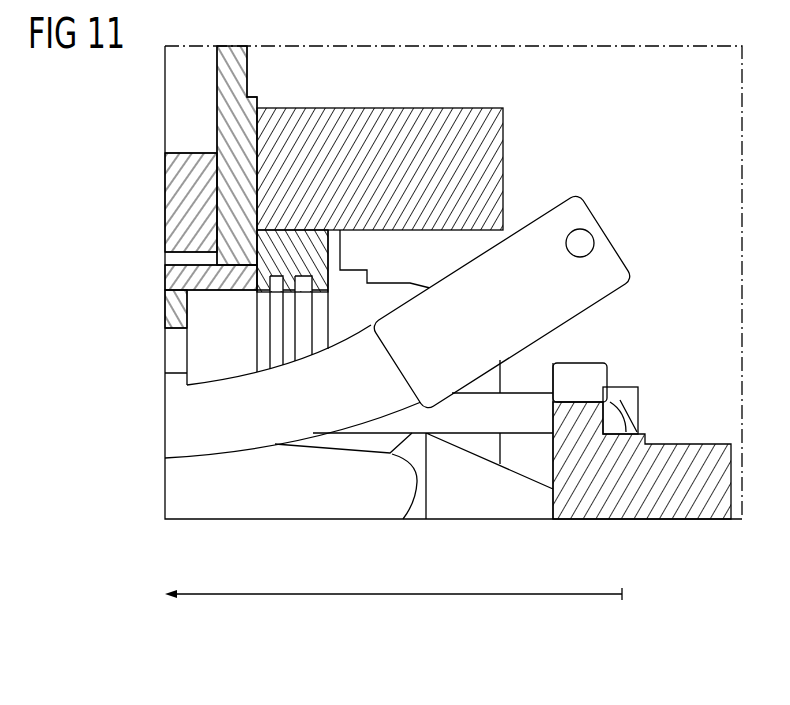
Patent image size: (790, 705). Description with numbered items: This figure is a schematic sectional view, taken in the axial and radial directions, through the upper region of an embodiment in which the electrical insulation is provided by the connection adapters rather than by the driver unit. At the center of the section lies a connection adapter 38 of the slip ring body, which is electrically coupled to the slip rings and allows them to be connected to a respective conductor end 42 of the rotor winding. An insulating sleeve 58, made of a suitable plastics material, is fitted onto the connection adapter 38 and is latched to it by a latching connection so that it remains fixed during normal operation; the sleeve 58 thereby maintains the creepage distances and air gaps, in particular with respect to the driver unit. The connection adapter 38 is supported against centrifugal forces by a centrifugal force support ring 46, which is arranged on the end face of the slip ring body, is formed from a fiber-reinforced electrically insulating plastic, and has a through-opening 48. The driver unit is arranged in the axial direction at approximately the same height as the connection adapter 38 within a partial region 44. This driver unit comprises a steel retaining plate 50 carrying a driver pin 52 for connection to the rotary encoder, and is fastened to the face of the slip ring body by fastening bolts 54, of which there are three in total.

The connection adapter 38 is at (602, 206).
The conductor end 42 is at (178, 422).
The partial region 44 is at (428, 597).
The centrifugal force support ring 46 is at (497, 146).
The through-opening 48 is at (546, 344).
The retaining plate 50 is at (597, 377).
The driver pin 52 is at (680, 503).
The fastening bolt 54 is at (525, 420).
The sleeve 58 is at (608, 255).